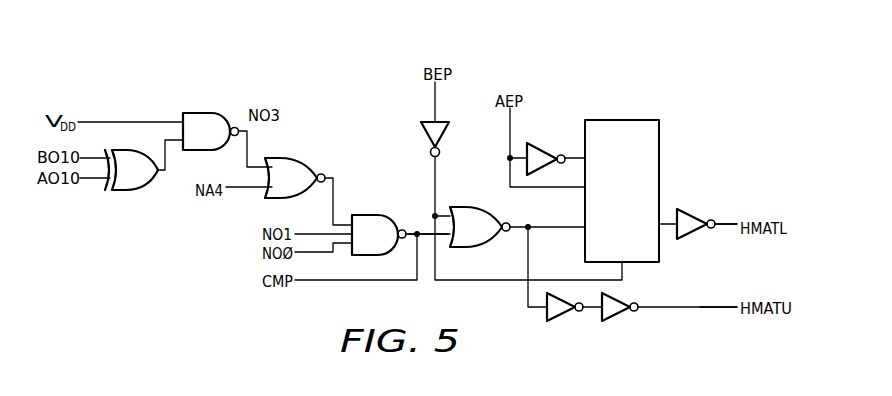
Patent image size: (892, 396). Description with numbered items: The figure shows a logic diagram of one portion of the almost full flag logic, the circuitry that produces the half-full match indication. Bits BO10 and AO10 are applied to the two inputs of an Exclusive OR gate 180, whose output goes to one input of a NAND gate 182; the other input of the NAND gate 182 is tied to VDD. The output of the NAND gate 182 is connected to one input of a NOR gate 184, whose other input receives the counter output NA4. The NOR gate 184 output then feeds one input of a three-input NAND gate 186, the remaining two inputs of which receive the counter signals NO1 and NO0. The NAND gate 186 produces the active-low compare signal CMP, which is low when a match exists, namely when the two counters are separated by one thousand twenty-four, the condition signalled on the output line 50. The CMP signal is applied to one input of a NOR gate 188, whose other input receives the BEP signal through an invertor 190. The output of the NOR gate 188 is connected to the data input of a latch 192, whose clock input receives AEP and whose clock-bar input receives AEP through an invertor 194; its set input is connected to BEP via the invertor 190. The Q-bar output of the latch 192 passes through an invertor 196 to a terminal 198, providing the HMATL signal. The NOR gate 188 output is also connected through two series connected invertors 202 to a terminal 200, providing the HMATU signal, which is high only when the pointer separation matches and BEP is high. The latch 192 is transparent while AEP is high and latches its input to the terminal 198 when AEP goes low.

The output line 50 is at (417, 230).
The Exclusive OR gate 180 is at (127, 192).
The NAND gate 182 is at (198, 111).
The NOR gate 184 is at (308, 158).
The three-input NAND gate 186 is at (373, 215).
The NOR gate 188 is at (465, 207).
The invertor 190 is at (421, 125).
The latch 192 is at (637, 120).
The invertor 194 is at (547, 142).
The invertor 196 is at (682, 209).
The terminal 198 is at (725, 222).
The terminal 200 is at (717, 304).
The series connected invertors 202 is at (565, 323).